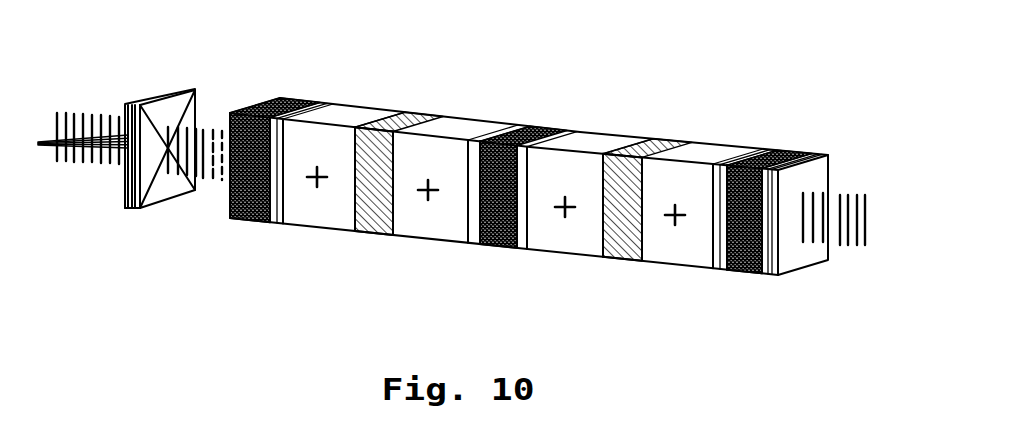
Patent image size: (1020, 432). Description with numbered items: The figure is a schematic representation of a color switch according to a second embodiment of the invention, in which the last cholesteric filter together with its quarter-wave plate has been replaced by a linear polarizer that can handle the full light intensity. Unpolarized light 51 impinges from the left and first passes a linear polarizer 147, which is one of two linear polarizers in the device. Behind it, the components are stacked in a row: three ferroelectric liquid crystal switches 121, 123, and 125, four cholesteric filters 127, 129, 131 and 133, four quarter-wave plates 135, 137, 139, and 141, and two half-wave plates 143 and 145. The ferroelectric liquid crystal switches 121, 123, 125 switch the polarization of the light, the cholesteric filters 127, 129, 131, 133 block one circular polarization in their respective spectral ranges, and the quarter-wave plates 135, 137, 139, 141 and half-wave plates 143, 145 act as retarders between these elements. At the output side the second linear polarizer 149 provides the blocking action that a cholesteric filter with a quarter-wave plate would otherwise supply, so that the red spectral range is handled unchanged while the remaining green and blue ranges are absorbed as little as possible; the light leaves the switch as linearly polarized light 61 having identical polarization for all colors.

The unpolarized light 51 is at (83, 151).
The linearly polarized light 61 is at (839, 233).
The ferroelectric liquid crystal switch 121 is at (250, 222).
The ferroelectric liquid crystal switch 123 is at (503, 251).
The ferroelectric liquid crystal switch 125 is at (747, 271).
The cholesteric filter 127 is at (328, 231).
The cholesteric filter 129 is at (430, 243).
The cholesteric filter 131 is at (567, 258).
The cholesteric filter 133 is at (673, 268).
The quarter-wave plate 135 is at (277, 226).
The quarter-wave plate 137 is at (472, 244).
The quarter-wave plate 139 is at (521, 249).
The quarter-wave plate 141 is at (722, 271).
The half-wave plate 143 is at (422, 112).
The half-wave plate 145 is at (675, 143).
The linear polarizer 147 is at (135, 208).
The linear polarizer 149 is at (770, 275).